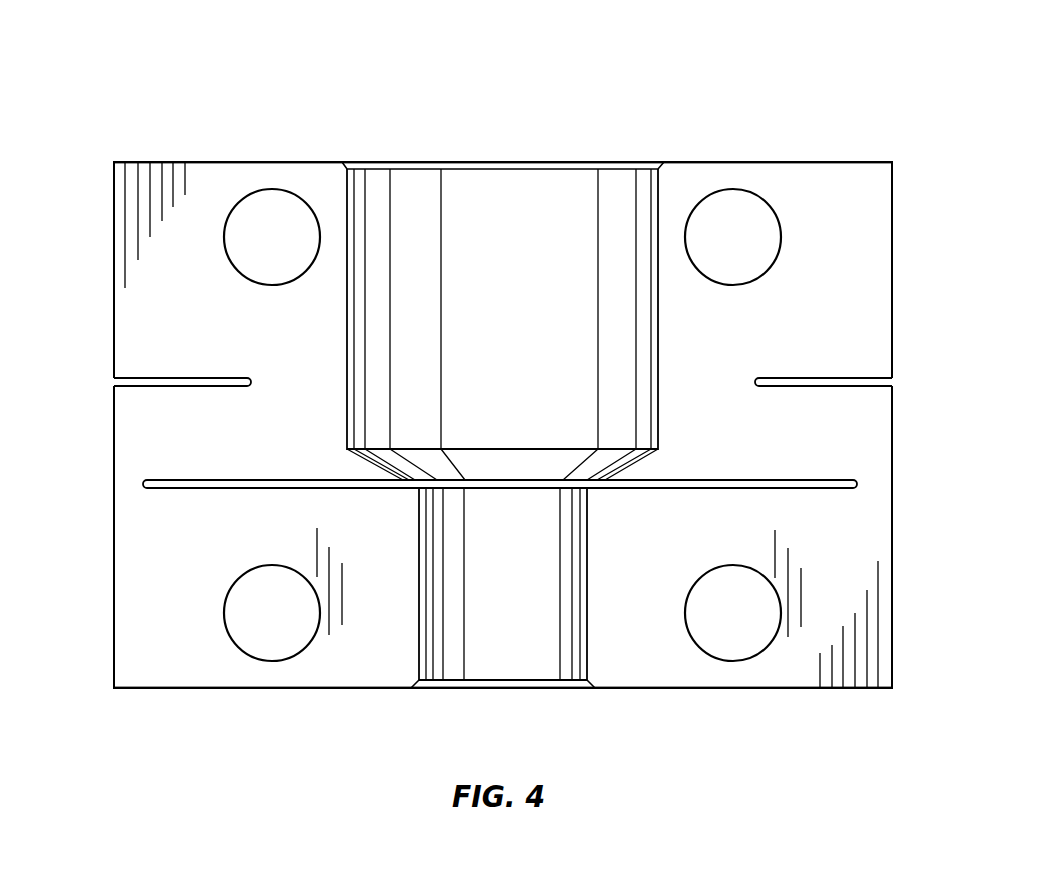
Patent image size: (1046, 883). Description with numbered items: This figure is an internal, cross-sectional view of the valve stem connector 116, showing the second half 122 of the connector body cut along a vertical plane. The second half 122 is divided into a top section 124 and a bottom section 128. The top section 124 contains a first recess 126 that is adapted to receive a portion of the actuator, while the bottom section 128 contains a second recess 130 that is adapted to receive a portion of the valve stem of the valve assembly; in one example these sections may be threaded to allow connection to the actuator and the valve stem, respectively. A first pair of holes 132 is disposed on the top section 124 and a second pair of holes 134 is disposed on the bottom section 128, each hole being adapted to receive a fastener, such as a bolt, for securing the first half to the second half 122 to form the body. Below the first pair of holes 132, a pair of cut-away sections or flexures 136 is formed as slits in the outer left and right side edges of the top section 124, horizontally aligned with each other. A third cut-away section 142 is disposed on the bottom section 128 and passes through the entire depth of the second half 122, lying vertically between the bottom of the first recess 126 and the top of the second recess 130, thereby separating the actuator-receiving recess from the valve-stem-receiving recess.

The valve stem connector 116 is at (781, 98).
The second half 122 is at (115, 508).
The top section 124 is at (724, 347).
The first recess 126 is at (585, 190).
The bottom section 128 is at (724, 541).
The second recess 130 is at (542, 665).
The first pair of holes 132 is at (228, 263).
The second pair of holes 134 is at (228, 642).
The cut-away sections or flexures 136 is at (140, 378).
The third cut-away section 142 is at (205, 480).